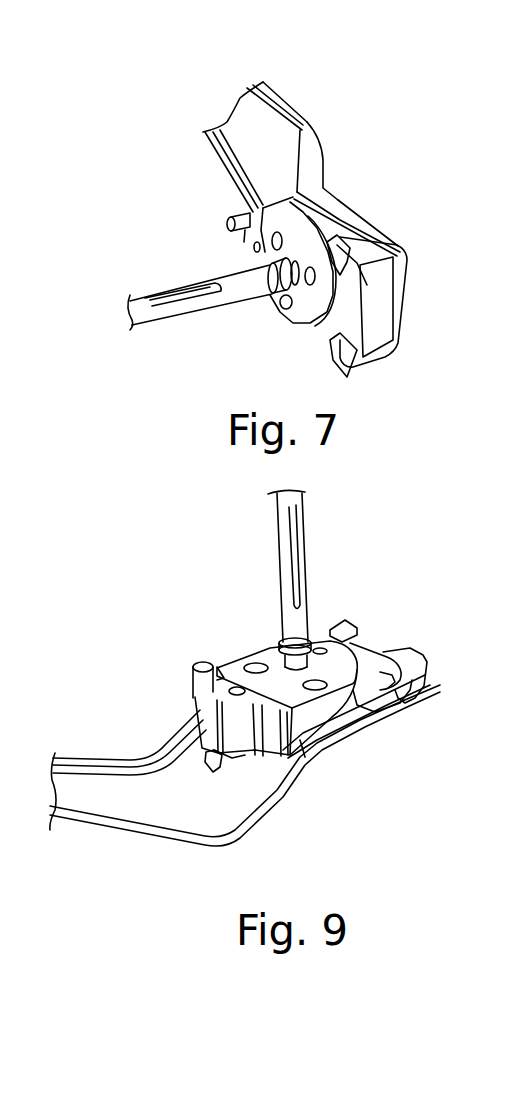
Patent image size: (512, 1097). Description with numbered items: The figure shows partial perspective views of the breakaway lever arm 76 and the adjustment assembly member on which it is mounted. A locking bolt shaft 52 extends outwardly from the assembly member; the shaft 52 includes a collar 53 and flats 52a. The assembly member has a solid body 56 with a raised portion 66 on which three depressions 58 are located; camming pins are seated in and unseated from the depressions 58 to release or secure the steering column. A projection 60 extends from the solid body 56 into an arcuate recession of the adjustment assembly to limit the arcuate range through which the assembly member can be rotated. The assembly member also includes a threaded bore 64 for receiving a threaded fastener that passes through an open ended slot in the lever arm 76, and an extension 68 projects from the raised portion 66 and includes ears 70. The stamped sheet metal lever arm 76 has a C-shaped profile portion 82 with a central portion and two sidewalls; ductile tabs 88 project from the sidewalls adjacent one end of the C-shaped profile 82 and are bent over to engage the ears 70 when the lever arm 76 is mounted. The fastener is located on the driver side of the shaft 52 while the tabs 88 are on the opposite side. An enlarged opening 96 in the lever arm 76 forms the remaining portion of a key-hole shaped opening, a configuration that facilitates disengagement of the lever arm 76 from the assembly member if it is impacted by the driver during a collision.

In FIG. 7, the locking bolt shaft 52 is at (235, 298).
In FIG. 9, the locking bolt shaft 52 is at (278, 520).
In FIG. 7, the flats 52a is at (150, 297).
In FIG. 9, the collar 53 is at (277, 638).
In FIG. 7, the solid body 56 is at (292, 205).
In FIG. 9, the solid body 56 is at (323, 727).
In FIG. 7, the depressions 58 is at (267, 207).
In FIG. 9, the depressions 58 is at (314, 645).
In FIG. 7, the projection 60 is at (227, 220).
In FIG. 9, the projection 60 is at (192, 680).
In FIG. 7, the threaded bore 64 is at (253, 247).
In FIG. 9, the threaded bore 64 is at (238, 695).
In FIG. 7, the raised portion 66 is at (312, 216).
In FIG. 9, the raised portion 66 is at (318, 727).
In FIG. 7, the extension 68 is at (377, 320).
In FIG. 9, the extension 68 is at (382, 660).
In FIG. 9, the ears 70 is at (412, 684).
In FIG. 7, the breakaway lever arm 76 is at (307, 130).
In FIG. 9, the breakaway lever arm 76 is at (105, 833).
In FIG. 7, the C-shaped profile portion 82 is at (343, 213).
In FIG. 9, the C-shaped profile portion 82 is at (348, 740).
In FIG. 9, the ductile tabs 88 is at (350, 632).
In FIG. 9, the enlarged opening 96 is at (219, 783).